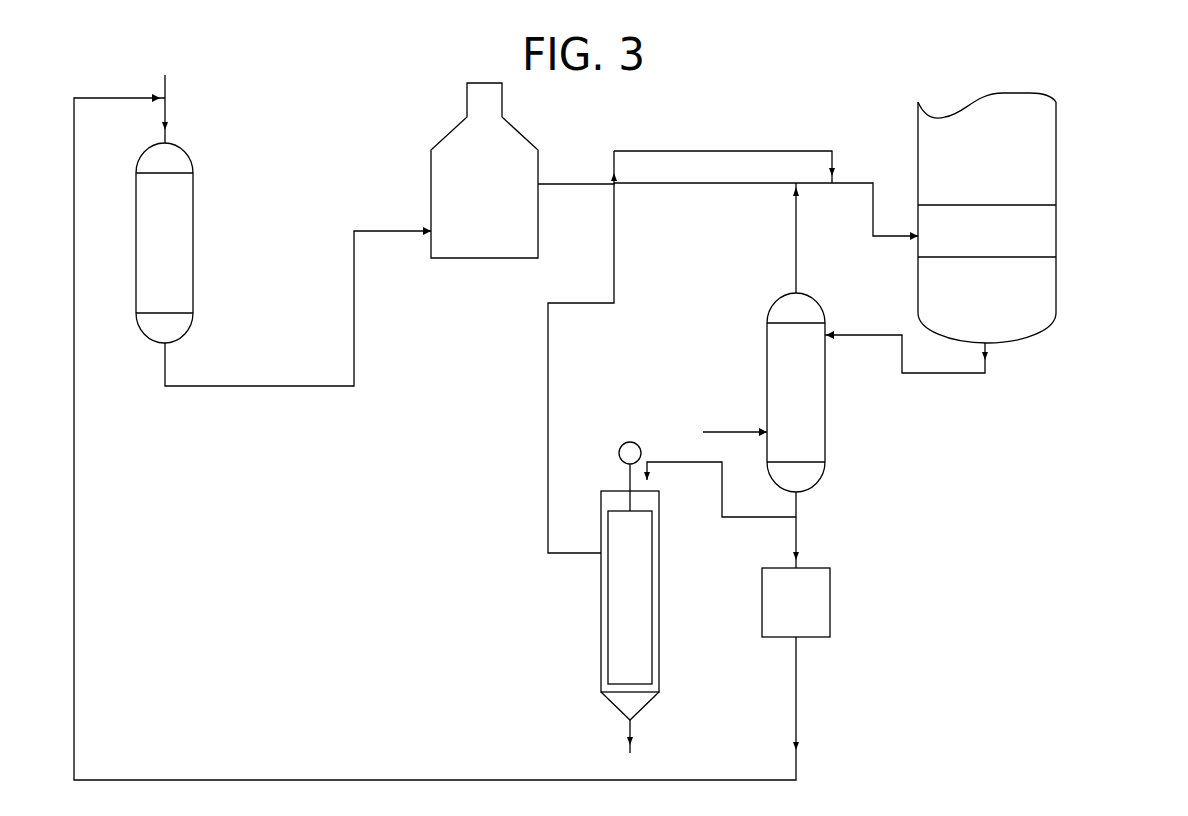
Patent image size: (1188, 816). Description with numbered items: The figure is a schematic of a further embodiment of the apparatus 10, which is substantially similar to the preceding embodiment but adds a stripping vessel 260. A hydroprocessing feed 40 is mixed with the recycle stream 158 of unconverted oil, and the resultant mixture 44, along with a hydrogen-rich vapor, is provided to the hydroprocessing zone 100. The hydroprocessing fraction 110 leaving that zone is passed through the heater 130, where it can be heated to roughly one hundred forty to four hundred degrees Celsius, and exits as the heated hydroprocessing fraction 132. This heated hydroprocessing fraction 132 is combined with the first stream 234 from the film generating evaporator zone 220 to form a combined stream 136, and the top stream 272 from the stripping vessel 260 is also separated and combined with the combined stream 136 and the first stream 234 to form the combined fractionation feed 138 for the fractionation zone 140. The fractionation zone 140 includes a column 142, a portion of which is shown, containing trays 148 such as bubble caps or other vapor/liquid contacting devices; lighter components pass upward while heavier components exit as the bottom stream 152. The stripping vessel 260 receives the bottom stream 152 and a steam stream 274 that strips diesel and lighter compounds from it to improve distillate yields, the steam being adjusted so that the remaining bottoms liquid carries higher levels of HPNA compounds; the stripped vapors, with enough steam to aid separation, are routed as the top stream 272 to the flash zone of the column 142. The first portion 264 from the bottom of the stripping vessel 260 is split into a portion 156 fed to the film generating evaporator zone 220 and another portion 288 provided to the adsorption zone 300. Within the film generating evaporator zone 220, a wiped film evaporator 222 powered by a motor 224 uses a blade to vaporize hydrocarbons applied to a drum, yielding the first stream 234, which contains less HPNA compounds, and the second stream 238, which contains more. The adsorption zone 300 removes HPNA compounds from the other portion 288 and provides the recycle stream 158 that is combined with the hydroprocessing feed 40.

The apparatus 10 is at (122, 77).
The hydroprocessing feed 40 is at (168, 88).
The resultant mixture 44 is at (168, 103).
The hydroprocessing zone 100 is at (193, 215).
The hydroprocessing fraction 110 is at (255, 387).
The heater 130 is at (452, 135).
The heated hydroprocessing fraction 132 is at (560, 183).
The combined stream 136 is at (820, 180).
The combined fractionation feed 138 is at (878, 238).
The fractionation zone 140 is at (1058, 140).
The column 142 is at (1009, 159).
The trays 148 is at (1043, 203).
The bottom stream 152 is at (987, 347).
The portion 156 is at (683, 455).
The recycle stream 158 is at (800, 697).
The film generating evaporator zone 220 is at (600, 600).
The wiped film evaporator 222 is at (648, 591).
The motor 224 is at (618, 447).
The first stream 234 is at (549, 340).
The second stream 238 is at (628, 725).
The stripping vessel 260 is at (826, 410).
The first portion 264 is at (800, 500).
The top stream 272 is at (798, 250).
The steam stream 274 is at (733, 427).
The another portion 288 is at (795, 530).
The adsorption zone 300 is at (812, 566).